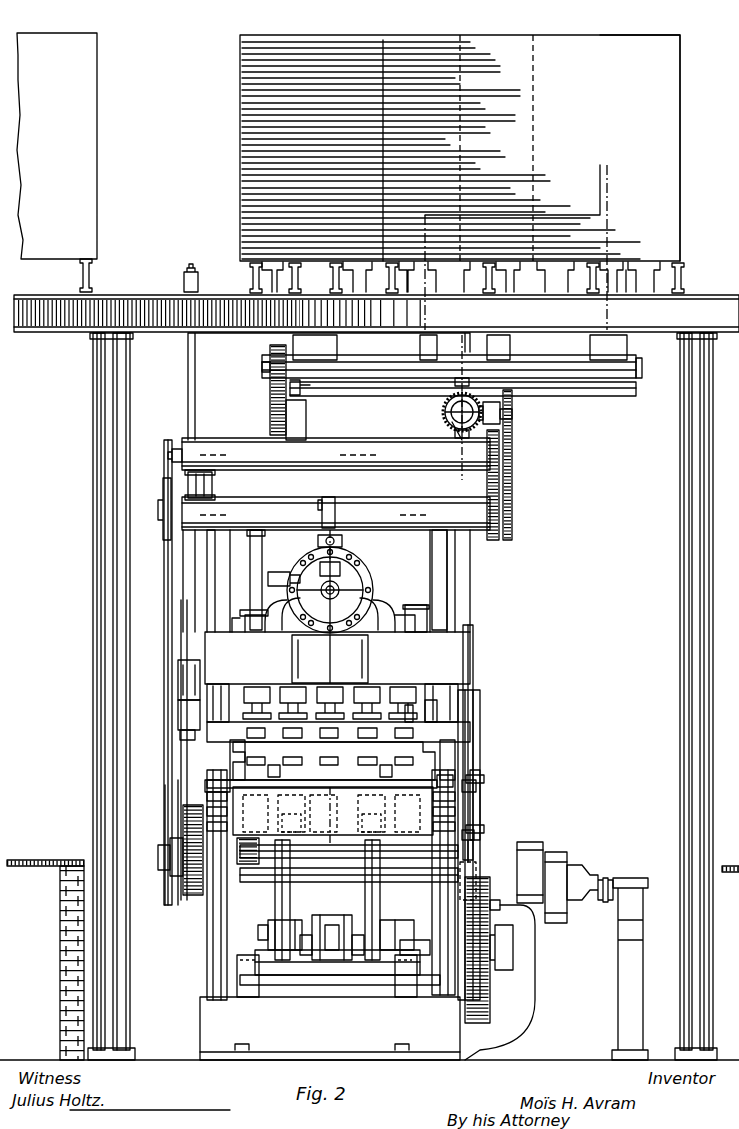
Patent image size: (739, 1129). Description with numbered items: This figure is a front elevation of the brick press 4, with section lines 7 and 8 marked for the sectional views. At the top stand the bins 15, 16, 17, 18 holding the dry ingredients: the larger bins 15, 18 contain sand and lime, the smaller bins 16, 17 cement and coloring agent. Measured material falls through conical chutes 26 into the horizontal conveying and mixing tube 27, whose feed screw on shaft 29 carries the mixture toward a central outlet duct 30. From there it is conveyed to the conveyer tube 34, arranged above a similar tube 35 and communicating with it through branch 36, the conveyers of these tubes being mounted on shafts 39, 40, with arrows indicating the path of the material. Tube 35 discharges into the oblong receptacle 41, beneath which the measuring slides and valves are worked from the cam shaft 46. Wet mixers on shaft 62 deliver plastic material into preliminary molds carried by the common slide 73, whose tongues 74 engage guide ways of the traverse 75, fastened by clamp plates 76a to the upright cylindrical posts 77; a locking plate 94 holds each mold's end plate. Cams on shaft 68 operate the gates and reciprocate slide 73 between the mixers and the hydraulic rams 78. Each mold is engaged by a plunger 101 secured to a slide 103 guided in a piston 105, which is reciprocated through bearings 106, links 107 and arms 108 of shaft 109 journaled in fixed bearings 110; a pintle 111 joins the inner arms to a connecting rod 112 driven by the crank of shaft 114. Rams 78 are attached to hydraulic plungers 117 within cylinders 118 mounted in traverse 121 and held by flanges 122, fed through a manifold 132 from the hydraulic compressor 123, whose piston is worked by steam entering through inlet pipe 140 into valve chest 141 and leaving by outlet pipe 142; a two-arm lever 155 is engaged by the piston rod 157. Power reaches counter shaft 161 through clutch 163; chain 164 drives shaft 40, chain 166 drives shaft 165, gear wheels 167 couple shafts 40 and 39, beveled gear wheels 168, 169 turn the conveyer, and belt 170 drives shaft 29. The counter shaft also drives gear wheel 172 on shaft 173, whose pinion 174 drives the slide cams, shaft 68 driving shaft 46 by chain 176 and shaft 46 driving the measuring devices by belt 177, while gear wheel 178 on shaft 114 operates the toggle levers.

The brick press 4 is at (330, 1012).
The section line 7— 7 is at (533, 302).
The section line 8— 8 is at (502, 273).
The bin 15 is at (313, 37).
The bin 16 is at (422, 36).
The bin 17 is at (490, 37).
The bin 18 is at (635, 135).
The conical chute 26 is at (487, 349).
The conveying and mixing tube 27 is at (617, 390).
The shaft 29 is at (262, 366).
The central outlet duct 30 is at (500, 397).
The conveyer tube 34 is at (362, 458).
The conveyer tube 35 is at (336, 512).
The branch 36 is at (188, 486).
The shaft 39 is at (172, 455).
The shaft 40 is at (163, 515).
The oblong receptacle 41 is at (447, 552).
The cam shaft 46 is at (470, 650).
The shaft 62 is at (197, 709).
The shaft 68 is at (480, 801).
The slide 73 is at (435, 762).
The tongue 74 is at (455, 760).
The traverse 75 is at (440, 735).
The clamp plate 76a is at (453, 781).
The upright cylindrical post 77 is at (437, 720).
The hydraulic ram 78 is at (413, 715).
The locking plate 94 is at (476, 786).
The plunger 101 is at (215, 787).
The slide 103 is at (207, 809).
The piston 105 is at (235, 812).
The bearing 106 is at (333, 816).
The link 107 is at (286, 871).
The arm 108 is at (385, 930).
The shaft 109 is at (290, 975).
The fixed bearing 110 is at (250, 980).
The pintle 111 is at (285, 940).
The connecting rod 112 is at (335, 925).
The shaft 114 is at (408, 948).
The hydraulic plunger 117 is at (405, 698).
The cylinder 118 is at (427, 623).
The traverse 121 is at (200, 680).
The flange 122 is at (290, 697).
The hydraulic compressor 123 is at (373, 586).
The manifold 132 is at (425, 600).
The inlet pipe 140 is at (335, 506).
The valve chest 141 is at (342, 540).
The outlet pipe 142 is at (270, 545).
The two-arm lever 155 is at (290, 577).
The piston rod 157 is at (300, 590).
The counter shaft 161 is at (440, 882).
The clutch 163 is at (578, 865).
The chain 164 is at (168, 635).
The shaft 165 is at (358, 403).
The chain 166 is at (500, 447).
The gear wheel 167 is at (500, 505).
The beveled gear wheel 168 is at (445, 404).
The beveled gear wheel 169 is at (513, 424).
The belt 170 is at (270, 393).
The gear wheel 172 is at (192, 885).
The shaft 173 is at (358, 848).
The pinion 174 is at (259, 859).
The chain 176 is at (477, 672).
The belt 177 is at (188, 347).
The gear wheel 178 is at (492, 987).